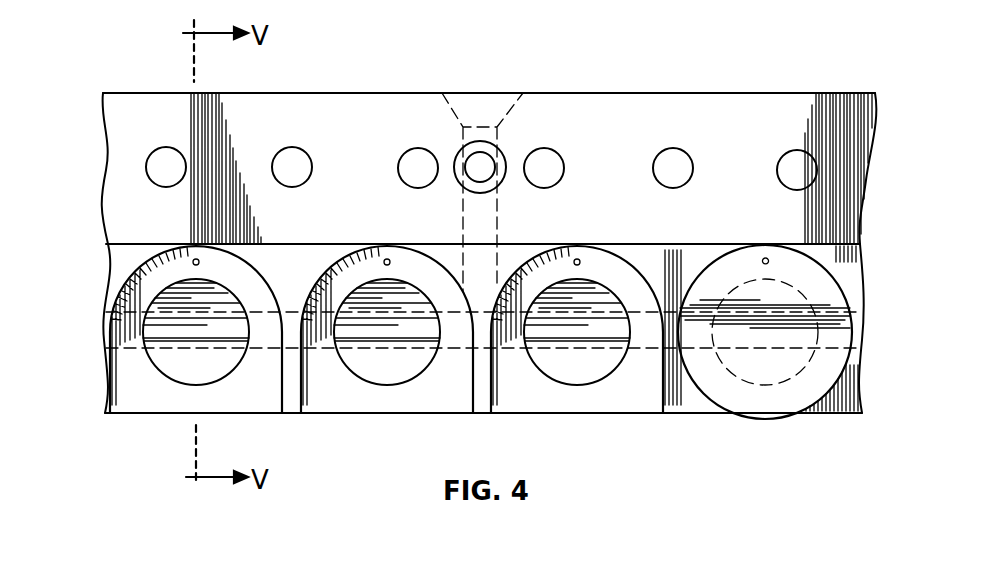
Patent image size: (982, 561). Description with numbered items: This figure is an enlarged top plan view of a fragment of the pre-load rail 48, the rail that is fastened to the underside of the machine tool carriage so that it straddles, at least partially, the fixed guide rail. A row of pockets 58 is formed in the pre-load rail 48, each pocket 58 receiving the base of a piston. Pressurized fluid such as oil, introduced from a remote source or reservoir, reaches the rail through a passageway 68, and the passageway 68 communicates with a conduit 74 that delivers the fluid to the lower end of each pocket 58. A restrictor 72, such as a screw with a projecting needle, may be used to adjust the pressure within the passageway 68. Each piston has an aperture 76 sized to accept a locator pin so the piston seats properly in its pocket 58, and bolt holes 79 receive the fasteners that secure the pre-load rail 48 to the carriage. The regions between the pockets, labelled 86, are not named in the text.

The pre-load rail 48 is at (842, 273).
The pocket 58 is at (388, 365).
The passageway 68 is at (482, 227).
The restrictor 72 is at (470, 163).
The conduit 74 is at (380, 333).
The aperture 76 is at (197, 258).
The bolt holes 79 is at (182, 173).
The bulkhead 86 is at (150, 403).